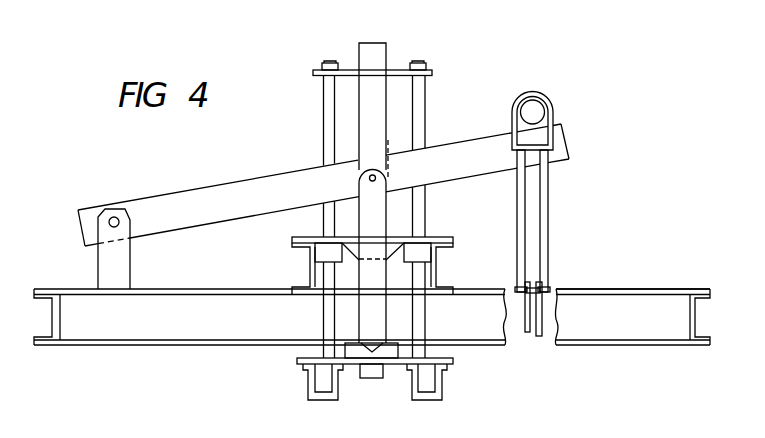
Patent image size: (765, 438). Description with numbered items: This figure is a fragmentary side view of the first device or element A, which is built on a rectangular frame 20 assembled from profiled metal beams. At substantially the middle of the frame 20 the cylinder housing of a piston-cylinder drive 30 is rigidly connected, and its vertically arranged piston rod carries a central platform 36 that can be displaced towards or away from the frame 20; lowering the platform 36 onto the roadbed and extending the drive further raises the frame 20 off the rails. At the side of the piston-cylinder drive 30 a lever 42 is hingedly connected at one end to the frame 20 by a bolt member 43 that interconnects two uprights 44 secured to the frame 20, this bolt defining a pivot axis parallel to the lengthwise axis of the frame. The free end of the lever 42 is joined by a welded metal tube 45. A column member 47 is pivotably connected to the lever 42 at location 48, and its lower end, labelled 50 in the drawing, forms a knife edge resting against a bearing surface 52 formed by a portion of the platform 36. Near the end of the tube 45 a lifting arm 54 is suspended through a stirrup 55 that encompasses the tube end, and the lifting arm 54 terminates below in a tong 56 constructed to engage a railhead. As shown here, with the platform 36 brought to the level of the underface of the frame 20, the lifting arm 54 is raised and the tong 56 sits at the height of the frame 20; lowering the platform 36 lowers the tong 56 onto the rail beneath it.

The rectangular frame 20 is at (186, 340).
The piston-cylinder drive 30 is at (377, 138).
The central platform 36 is at (309, 367).
The lever 42 is at (211, 199).
The bolt member 43 is at (112, 216).
The upright 44 is at (125, 277).
The metal tube 45 is at (514, 105).
The column member 47 is at (378, 208).
The pivot location 48 is at (368, 176).
The pointed bar end 50 is at (374, 343).
The bearing surface 52 is at (360, 359).
The lifting arm 54 is at (546, 215).
The stirrup 55 is at (548, 125).
The tong 56 is at (540, 336).
The first device A is at (609, 288).